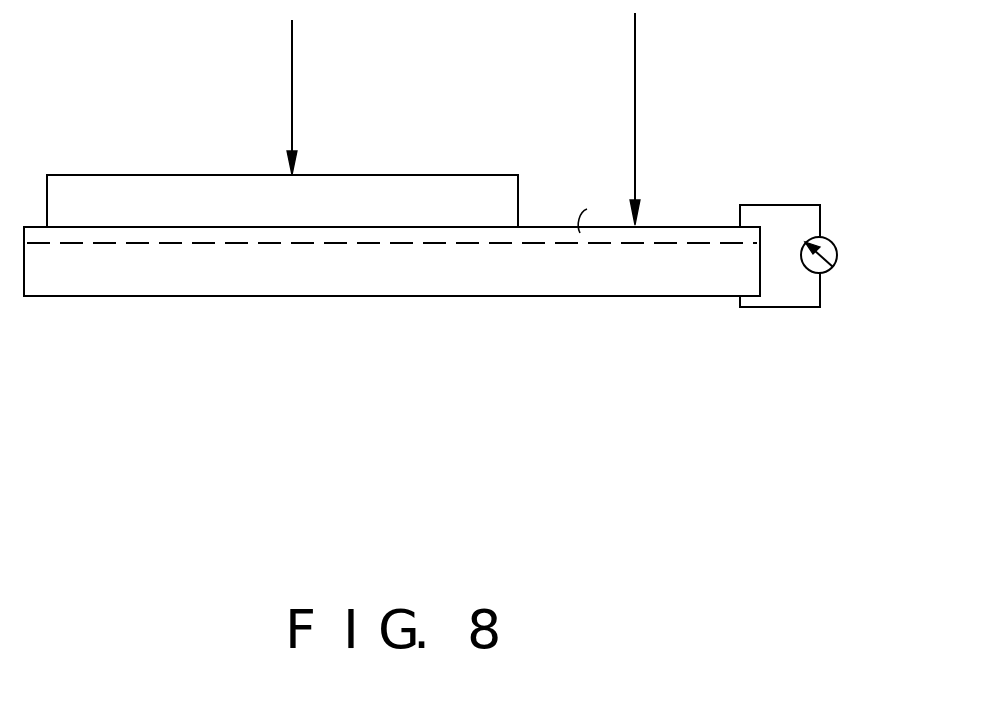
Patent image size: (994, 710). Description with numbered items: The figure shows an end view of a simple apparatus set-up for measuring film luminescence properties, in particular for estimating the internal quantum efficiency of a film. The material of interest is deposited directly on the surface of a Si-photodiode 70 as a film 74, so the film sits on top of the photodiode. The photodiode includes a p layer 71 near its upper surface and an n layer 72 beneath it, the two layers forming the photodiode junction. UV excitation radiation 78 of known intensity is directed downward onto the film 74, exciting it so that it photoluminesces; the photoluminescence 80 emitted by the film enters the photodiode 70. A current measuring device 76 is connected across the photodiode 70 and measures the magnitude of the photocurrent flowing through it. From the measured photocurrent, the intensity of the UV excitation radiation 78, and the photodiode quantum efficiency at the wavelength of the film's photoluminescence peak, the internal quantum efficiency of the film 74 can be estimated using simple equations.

The Si-photodiode 70 is at (683, 226).
The p layer 71 is at (522, 232).
The n layer 72 is at (572, 268).
The film 74 is at (417, 177).
The current measuring device 76 is at (837, 248).
The UV excitation radiation 78 is at (292, 116).
The photoluminescence light (hv = PL) 80 is at (635, 86).